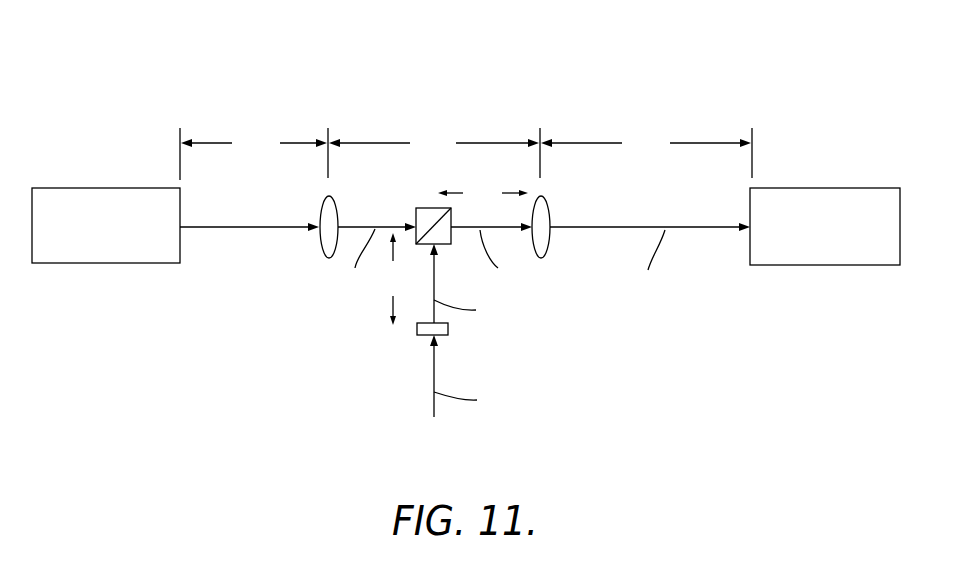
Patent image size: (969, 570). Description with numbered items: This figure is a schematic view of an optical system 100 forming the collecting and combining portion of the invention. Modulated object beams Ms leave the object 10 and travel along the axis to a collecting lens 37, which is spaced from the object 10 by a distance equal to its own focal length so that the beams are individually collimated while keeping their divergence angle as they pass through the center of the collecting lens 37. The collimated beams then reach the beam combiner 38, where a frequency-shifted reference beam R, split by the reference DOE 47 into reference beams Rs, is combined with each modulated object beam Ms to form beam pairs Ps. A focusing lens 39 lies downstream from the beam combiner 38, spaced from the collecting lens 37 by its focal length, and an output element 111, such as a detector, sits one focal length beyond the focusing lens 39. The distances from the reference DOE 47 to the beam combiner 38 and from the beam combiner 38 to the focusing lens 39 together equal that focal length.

The optical system 100 is at (520, 79).
The object 10 is at (88, 188).
The output element 111 is at (830, 188).
The collecting lens 37 is at (327, 258).
The beam combiner 38 is at (414, 209).
The focusing lens 39 is at (545, 257).
The reference DOE 47 is at (449, 334).